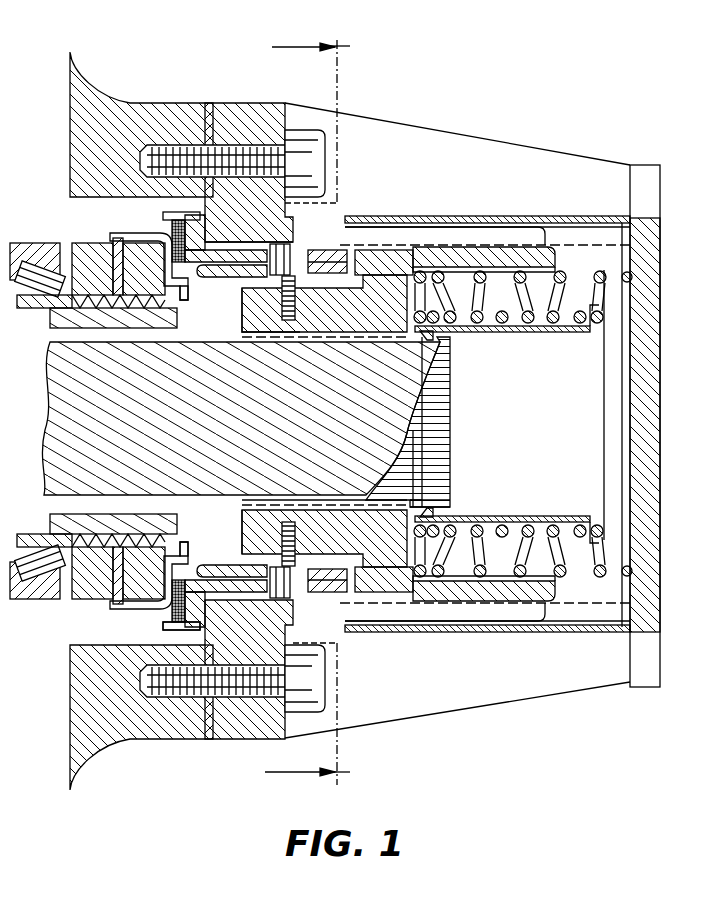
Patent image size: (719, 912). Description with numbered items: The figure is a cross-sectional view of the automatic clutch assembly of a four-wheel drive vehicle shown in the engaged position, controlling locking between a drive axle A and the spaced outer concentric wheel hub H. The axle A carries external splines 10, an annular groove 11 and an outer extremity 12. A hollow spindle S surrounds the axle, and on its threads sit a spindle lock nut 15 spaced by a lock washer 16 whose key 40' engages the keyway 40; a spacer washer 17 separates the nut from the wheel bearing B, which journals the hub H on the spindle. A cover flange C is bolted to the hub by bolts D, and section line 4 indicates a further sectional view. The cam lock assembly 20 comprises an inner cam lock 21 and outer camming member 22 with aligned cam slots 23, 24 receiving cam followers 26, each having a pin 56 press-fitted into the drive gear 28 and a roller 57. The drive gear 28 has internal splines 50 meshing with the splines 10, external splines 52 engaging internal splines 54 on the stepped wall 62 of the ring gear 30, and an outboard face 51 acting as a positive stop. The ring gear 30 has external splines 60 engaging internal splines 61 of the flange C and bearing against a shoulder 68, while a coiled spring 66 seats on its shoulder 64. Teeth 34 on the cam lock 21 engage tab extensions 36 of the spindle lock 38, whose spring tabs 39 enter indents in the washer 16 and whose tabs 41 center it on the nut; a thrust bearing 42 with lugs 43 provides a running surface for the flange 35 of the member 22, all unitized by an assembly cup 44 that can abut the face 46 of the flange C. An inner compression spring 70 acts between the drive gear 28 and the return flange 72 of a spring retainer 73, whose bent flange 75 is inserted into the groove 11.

The wheel hub H is at (110, 102).
The bolts D is at (212, 104).
The cover flange C is at (478, 143).
The drive axle A is at (47, 372).
The wheel bearing B is at (42, 243).
The spindle S is at (200, 503).
The section line 4- 4 is at (298, 411).
The external splines 10 is at (168, 500).
The annular groove 11 is at (415, 427).
The outer extremity 12 is at (452, 372).
The spindle lock nut 15 is at (90, 243).
The lock washer 16 is at (120, 243).
The spacer washer 17 is at (62, 537).
The cam lock assembly 20 is at (240, 242).
The inner cam lock member 21 is at (345, 263).
The outer camming member 22 is at (320, 251).
The cam slots 23 is at (247, 301).
The cam slots 24 is at (250, 263).
The cam follower members 26 is at (300, 597).
The drive gear 28 is at (267, 524).
The ring gear 30 is at (442, 248).
The teeth 34 is at (188, 302).
The flange 35 is at (197, 215).
The tab extensions 36 is at (178, 302).
The spindle lock 38 is at (162, 217).
The spring tabs 39 is at (50, 243).
The keyway 40 is at (97, 329).
The key 40' is at (118, 335).
The tabs 41 is at (152, 588).
The thrust bearing 42 is at (178, 211).
The lugs 43 is at (114, 584).
The assembly cup 44 is at (157, 215).
The face 46 is at (203, 232).
The internal splines 50 is at (316, 502).
The outboard face 51 is at (412, 547).
The external splines 52 is at (255, 556).
The internal splines 54 is at (390, 290).
The pin 56 is at (288, 321).
The roller 57 is at (296, 256).
The external splined portions 60 is at (489, 234).
The internal splined portions 61 is at (561, 235).
The internal wall 62 is at (385, 275).
The shoulder 64 is at (420, 568).
The coiled spring 66 is at (580, 577).
The shoulder 68 is at (363, 611).
The compression spring 70 is at (512, 533).
The return flanged portion 72 is at (600, 550).
The spring retainer 73 is at (543, 518).
The flange 75 is at (420, 505).